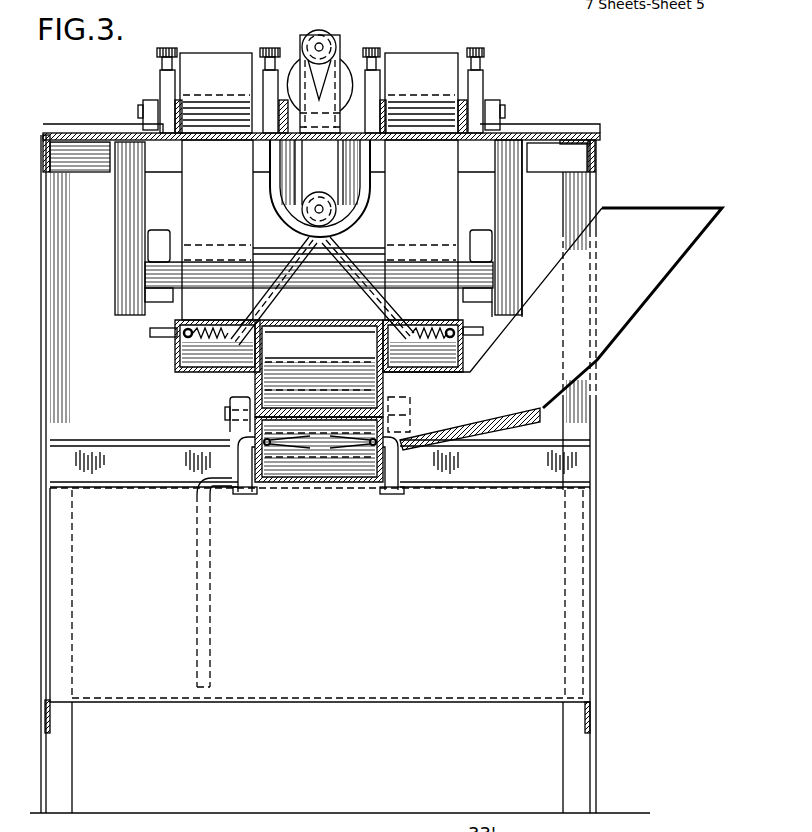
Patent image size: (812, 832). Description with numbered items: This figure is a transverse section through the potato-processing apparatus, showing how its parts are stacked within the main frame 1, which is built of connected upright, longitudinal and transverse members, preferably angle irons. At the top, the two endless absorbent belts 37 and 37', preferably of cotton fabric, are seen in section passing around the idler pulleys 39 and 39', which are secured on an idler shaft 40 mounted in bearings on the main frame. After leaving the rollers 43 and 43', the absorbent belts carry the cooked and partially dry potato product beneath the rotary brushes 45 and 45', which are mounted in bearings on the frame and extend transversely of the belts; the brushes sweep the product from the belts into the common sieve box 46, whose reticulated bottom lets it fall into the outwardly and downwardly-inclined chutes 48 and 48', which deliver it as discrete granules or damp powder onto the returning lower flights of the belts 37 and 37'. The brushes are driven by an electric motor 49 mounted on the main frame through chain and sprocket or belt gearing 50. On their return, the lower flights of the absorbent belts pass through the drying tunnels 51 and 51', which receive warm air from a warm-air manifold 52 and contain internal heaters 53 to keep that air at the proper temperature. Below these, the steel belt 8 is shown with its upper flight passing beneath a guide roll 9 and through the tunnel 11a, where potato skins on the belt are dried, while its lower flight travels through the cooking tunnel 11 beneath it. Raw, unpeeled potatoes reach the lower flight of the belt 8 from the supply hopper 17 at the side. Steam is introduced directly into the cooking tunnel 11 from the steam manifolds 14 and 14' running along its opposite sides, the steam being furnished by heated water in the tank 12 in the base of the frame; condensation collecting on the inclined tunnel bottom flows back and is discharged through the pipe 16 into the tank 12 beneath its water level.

The main frame 1 is at (590, 431).
The belt 8 is at (332, 410).
The guide roll 9 is at (368, 384).
The cooking tunnel 11 is at (323, 482).
The tunnel 11a is at (319, 368).
The tank 12 is at (317, 610).
The steam manifold 14 is at (256, 476).
The steam manifold 14' is at (384, 476).
The pipe 16 is at (197, 530).
The supply hopper 17 is at (616, 323).
The endless absorbent belt 37 is at (217, 271).
The endless absorbent belt 37' is at (421, 273).
The idler pulley 39 is at (217, 222).
The idler pulley 39' is at (421, 228).
The idler shaft 40 is at (263, 247).
The roller 43 is at (209, 83).
The roller 43' is at (434, 84).
The rotary brush 45 is at (231, 102).
The rotary brush 45' is at (454, 100).
The sieve box 46 is at (370, 185).
The chute 48 is at (274, 291).
The chute 48' is at (368, 288).
The electric motor 49 is at (291, 72).
The gearing 50 is at (325, 36).
The drying tunnel 51 is at (200, 346).
The drying tunnel 51' is at (423, 336).
The warm-air manifold 52 is at (150, 333).
The internal heater 53 is at (205, 330).